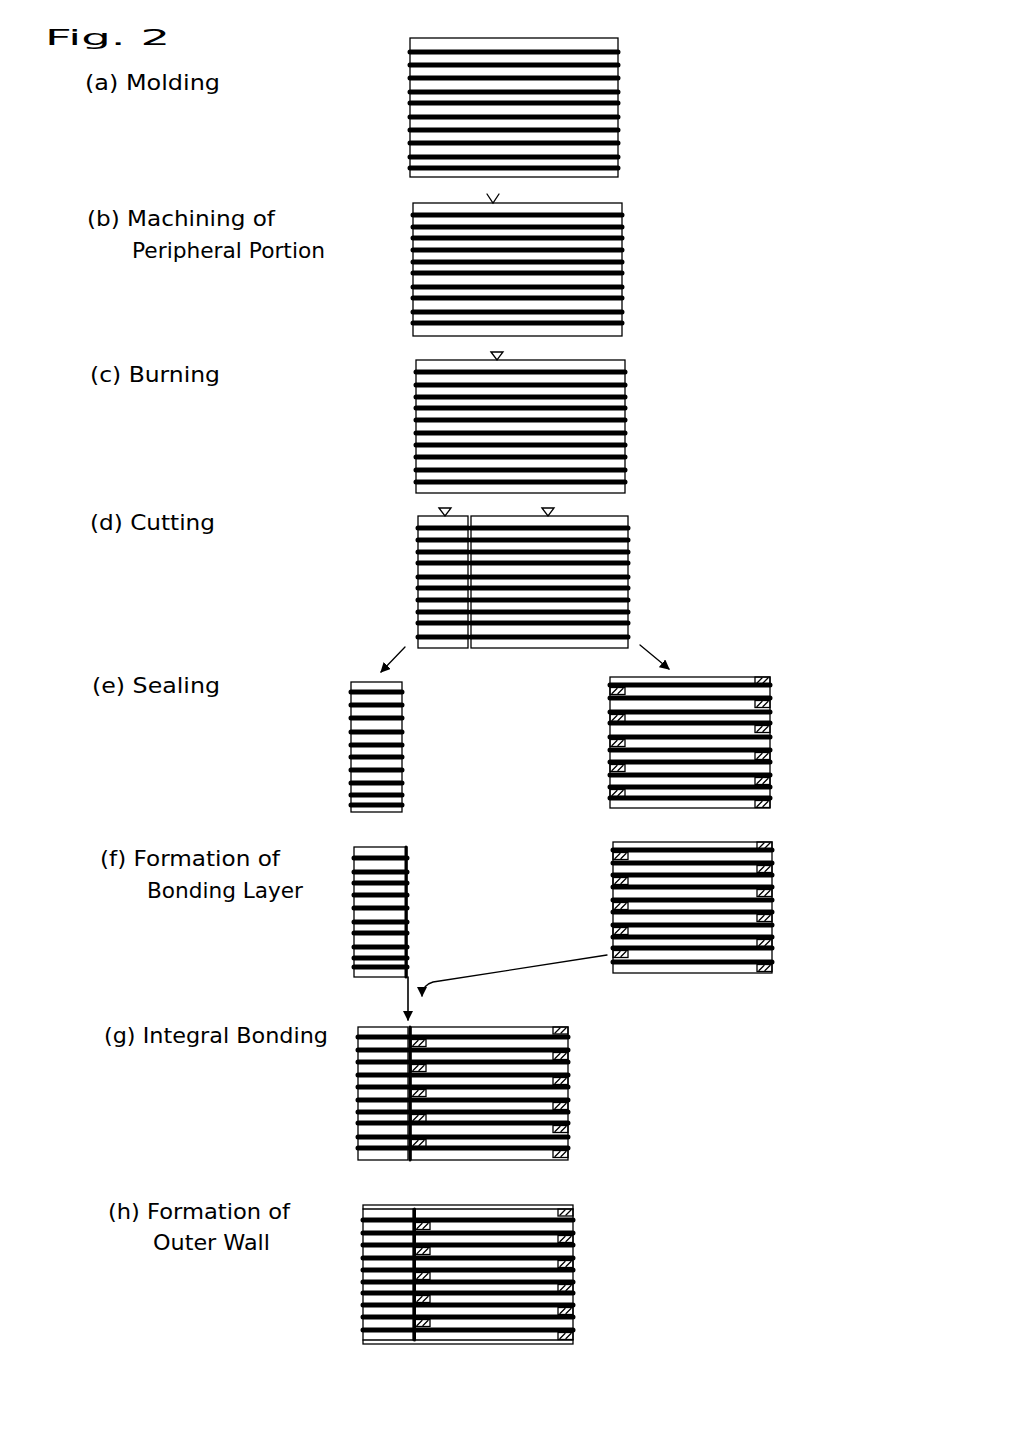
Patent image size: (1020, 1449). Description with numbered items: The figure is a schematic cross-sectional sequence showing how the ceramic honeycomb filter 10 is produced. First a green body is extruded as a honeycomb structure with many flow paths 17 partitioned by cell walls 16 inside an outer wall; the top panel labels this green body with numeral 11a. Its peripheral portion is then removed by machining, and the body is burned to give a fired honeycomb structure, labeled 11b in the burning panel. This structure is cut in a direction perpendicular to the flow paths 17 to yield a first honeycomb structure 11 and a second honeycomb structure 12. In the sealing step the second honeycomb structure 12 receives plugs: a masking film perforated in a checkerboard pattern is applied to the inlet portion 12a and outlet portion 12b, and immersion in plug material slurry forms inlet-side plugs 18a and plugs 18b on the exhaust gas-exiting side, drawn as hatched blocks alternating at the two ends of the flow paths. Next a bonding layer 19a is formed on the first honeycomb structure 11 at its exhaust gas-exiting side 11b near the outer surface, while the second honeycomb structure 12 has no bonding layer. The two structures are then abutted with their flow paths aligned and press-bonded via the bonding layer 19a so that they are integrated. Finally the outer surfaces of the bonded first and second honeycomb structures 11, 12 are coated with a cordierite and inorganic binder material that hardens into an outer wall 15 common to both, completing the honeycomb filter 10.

The ceramic honeycomb filter 10 is at (514, 1256).
The first honeycomb structure 11 is at (425, 536).
The honeycomb formed body 11a is at (481, 182).
The exhaust gas-exiting side 11b is at (422, 368).
The second honeycomb structure 12 is at (628, 531).
The inlet portion 12a is at (614, 732).
The outlet portion 12b is at (771, 717).
The outer wall 15 is at (568, 1208).
The cell walls 16 is at (418, 70).
The flow paths 17 is at (415, 97).
The inlet-side plugs 18a is at (612, 696).
The plugs on exhaust gas-exiting side 18b is at (758, 679).
The bonding layer 19a is at (410, 850).